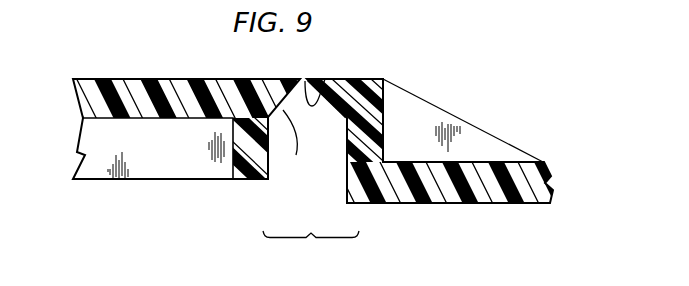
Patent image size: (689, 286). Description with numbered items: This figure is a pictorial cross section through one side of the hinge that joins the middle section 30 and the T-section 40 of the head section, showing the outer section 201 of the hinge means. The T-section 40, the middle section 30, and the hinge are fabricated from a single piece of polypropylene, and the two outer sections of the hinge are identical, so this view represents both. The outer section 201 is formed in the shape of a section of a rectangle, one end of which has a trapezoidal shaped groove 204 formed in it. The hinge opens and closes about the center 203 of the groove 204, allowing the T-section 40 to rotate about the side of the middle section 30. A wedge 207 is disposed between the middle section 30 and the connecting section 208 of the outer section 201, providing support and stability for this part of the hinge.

The T-section 40 is at (122, 78).
The middle section 30 is at (525, 193).
The outer section 201 is at (311, 246).
The center of groove 203 is at (325, 79).
The trapezoidal shaped groove 204 is at (296, 155).
The wedge 207 is at (472, 126).
The connecting section 208 is at (368, 132).